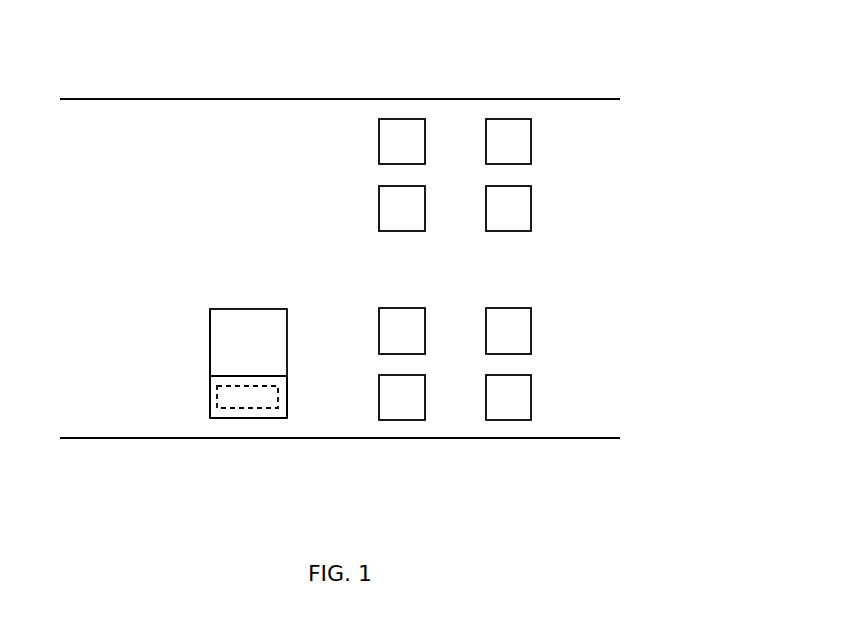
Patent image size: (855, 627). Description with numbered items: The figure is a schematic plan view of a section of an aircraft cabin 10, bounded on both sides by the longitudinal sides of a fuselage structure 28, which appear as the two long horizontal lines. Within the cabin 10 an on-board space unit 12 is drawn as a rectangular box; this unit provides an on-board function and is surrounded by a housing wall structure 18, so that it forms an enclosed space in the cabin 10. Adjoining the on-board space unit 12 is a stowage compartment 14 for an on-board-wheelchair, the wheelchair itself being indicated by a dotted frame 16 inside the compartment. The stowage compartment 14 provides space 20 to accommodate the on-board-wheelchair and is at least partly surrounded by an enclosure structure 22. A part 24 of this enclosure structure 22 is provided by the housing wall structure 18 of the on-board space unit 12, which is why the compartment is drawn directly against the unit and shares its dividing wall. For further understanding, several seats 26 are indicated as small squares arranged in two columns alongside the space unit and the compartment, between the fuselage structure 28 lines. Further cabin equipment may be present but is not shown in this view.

The aircraft cabin 10 is at (622, 161).
The on-board space unit 12 is at (240, 322).
The stowage compartment 14 is at (244, 400).
The dotted frame 16 is at (222, 424).
The housing wall structure 18 is at (210, 323).
The space 20 is at (287, 418).
The enclosure structure 22 is at (287, 390).
The part of the enclosure structure 24 is at (260, 376).
The seats 26 is at (531, 139).
The fuselage structure 28 is at (450, 99).